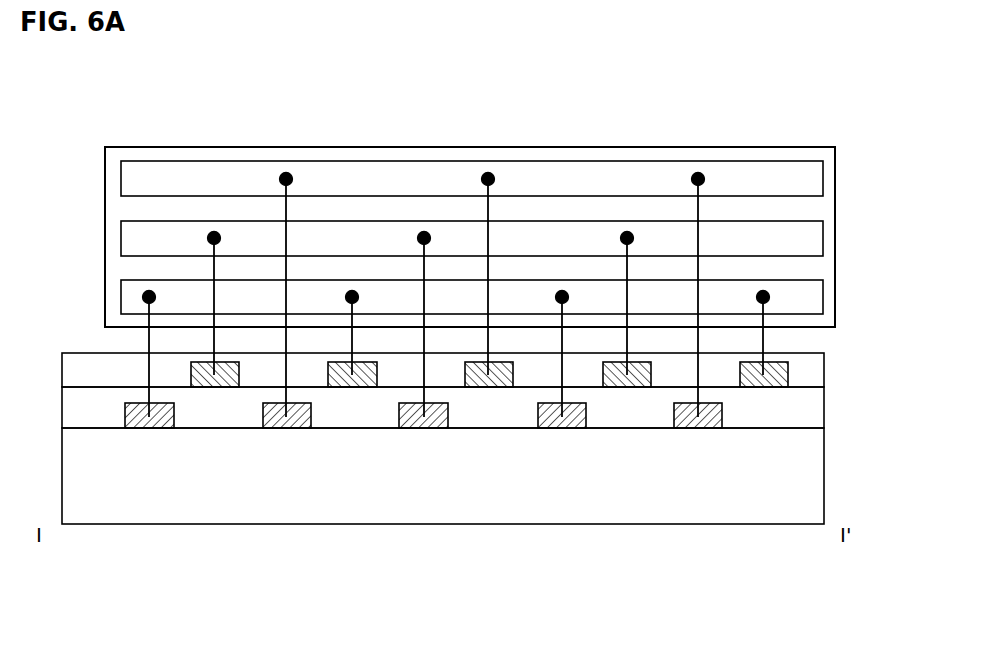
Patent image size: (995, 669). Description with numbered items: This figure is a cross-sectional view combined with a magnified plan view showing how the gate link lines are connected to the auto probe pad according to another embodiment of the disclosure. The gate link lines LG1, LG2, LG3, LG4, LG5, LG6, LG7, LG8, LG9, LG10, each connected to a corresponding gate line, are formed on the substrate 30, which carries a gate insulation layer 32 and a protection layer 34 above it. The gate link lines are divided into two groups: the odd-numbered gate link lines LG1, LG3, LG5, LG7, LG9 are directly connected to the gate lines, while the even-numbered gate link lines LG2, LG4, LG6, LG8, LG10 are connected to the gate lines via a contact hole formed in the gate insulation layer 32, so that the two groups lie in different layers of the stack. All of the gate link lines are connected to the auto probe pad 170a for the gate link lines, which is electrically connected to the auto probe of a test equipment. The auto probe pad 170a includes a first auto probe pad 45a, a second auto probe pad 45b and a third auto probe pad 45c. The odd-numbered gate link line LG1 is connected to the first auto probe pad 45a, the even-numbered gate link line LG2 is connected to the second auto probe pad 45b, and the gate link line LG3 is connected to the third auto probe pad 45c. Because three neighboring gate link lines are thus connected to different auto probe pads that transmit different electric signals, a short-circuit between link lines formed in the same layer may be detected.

The auto probe pad for the gate link lines 170a is at (590, 147).
The first auto probe pad 45a is at (823, 298).
The second auto probe pad 45b is at (823, 239).
The third auto probe pad 45c is at (823, 181).
The protection layer 34 is at (824, 368).
The gate insulation layer 32 is at (818, 407).
The substrate 30 is at (815, 476).
The odd-numbered gate link line LG1 is at (149, 372).
The even-numbered gate link line LG2 is at (221, 310).
The odd-numbered gate link line LG3 is at (287, 313).
The even-numbered gate link line LG4 is at (358, 339).
The odd-numbered gate link line LG5 is at (423, 343).
The even-numbered gate link line LG6 is at (497, 280).
The odd-numbered gate link line LG7 is at (562, 372).
The even-numbered gate link line LG8 is at (633, 310).
The odd-numbered gate link line LG9 is at (698, 313).
The even-numbered gate link line LG10 is at (777, 339).